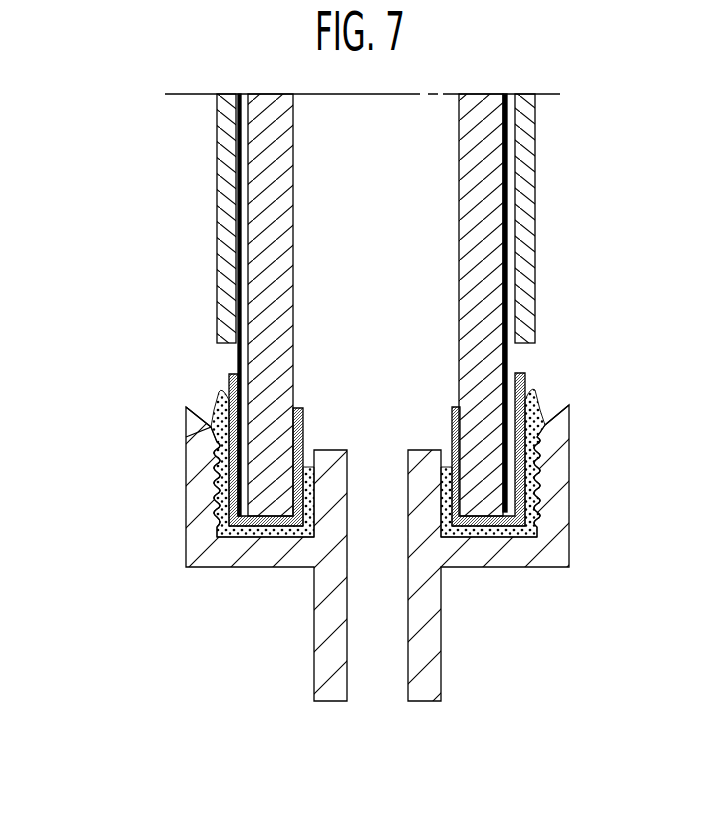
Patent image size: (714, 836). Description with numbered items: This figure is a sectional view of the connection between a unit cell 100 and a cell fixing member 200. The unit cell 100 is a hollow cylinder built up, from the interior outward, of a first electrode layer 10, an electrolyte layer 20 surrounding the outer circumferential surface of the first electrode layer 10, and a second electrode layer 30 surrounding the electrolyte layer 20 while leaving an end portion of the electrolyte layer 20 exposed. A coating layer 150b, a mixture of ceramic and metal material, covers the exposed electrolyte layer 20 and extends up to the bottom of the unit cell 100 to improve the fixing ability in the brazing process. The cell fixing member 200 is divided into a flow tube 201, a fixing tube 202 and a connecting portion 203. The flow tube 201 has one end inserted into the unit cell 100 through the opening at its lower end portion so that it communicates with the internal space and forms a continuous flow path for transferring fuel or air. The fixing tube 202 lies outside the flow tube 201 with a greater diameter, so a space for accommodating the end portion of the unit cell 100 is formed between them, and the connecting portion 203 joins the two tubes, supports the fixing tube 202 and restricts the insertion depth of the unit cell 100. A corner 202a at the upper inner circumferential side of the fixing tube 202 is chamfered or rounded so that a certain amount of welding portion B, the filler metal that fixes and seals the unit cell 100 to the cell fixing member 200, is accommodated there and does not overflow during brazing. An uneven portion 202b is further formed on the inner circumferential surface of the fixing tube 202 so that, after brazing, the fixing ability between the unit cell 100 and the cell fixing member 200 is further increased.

The unit cell 100 is at (192, 183).
The first electrode layer 10 is at (262, 211).
The electrolyte layer 20 is at (242, 257).
The second electrode layer 30 is at (222, 327).
The coating layer 150b is at (229, 381).
The corner 202a is at (186, 427).
The welding portion B is at (217, 445).
The uneven portion 202b is at (217, 493).
The cell fixing member 200 is at (291, 604).
The flow tube 201 is at (405, 698).
The fixing tube 202 is at (578, 403).
The connecting portion 203 is at (570, 568).